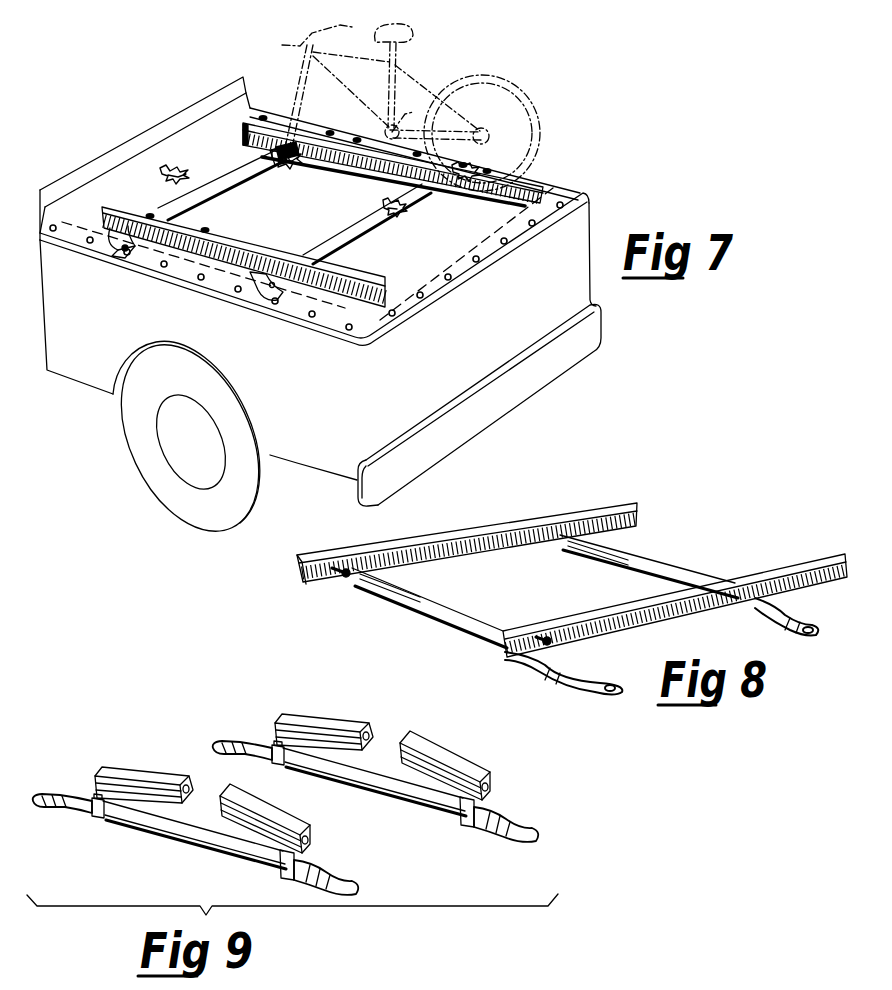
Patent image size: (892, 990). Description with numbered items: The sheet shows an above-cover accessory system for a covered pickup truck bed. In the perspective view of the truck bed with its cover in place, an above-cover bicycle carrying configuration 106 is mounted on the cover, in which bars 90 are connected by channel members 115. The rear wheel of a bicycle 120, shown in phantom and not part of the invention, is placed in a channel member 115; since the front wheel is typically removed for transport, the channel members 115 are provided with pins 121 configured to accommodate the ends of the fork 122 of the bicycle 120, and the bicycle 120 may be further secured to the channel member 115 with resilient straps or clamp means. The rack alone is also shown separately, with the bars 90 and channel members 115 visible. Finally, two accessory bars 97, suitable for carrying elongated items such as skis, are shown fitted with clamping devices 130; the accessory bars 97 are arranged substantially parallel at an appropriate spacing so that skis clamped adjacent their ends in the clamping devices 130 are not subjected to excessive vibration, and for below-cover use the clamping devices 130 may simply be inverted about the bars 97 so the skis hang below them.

In FIG. 7, the bars 90 is at (218, 190).
In FIG. 9, the accessory bar 97 is at (384, 786).
In FIG. 7, the above-cover bicycle carrying configuration 106 is at (351, 187).
In FIG. 7, the channel members 115 is at (120, 218).
In FIG. 7, the bicycle 120 is at (481, 72).
In FIG. 7, the pins 121 is at (137, 250).
In FIG. 7, the fork 122 is at (303, 110).
In FIG. 9, the clamping devices 130 is at (328, 714).